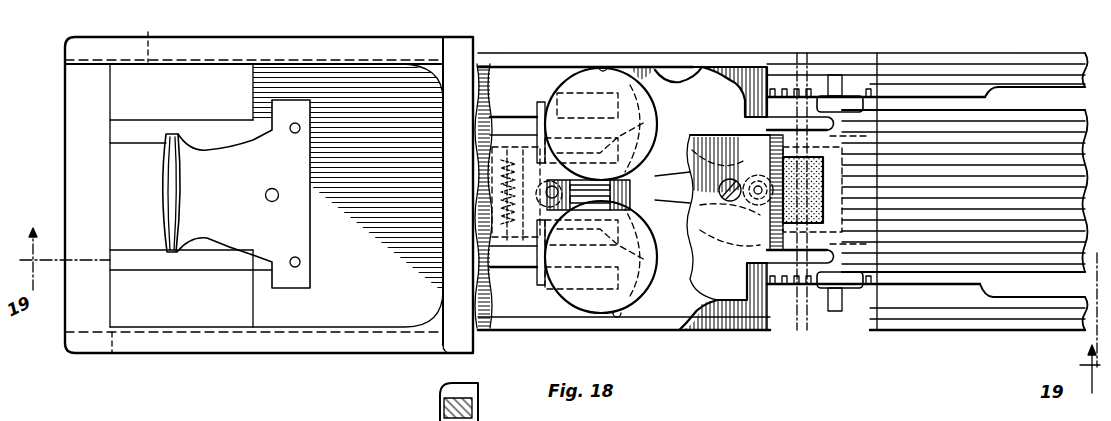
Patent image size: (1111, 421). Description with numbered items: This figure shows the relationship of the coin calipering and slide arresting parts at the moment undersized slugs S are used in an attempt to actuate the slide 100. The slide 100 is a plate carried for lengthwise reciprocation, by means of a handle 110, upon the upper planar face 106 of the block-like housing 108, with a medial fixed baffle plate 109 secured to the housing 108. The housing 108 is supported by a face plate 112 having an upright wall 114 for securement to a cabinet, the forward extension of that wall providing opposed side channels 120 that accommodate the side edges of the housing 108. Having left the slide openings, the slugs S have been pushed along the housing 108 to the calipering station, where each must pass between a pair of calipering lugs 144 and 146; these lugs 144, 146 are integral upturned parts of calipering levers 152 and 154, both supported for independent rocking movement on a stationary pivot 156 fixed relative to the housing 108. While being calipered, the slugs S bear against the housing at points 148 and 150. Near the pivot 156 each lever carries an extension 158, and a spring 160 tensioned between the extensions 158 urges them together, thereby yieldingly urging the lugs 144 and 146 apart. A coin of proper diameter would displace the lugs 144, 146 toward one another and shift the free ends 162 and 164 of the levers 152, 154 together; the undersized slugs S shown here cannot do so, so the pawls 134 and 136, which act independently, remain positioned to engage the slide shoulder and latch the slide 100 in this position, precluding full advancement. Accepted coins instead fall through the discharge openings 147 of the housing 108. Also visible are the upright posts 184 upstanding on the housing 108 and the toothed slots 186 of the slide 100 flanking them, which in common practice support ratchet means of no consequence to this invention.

The slide 100 is at (355, 312).
The upper planar face 106 is at (216, 305).
The housing 108 is at (155, 320).
The medial fixed baffle plate 109 is at (717, 242).
The handle 110 is at (198, 228).
The face plate 112 is at (304, 355).
The upright wall 114 is at (470, 47).
The side channels 120 is at (95, 371).
The pawl 134 is at (783, 160).
The pawl 136 is at (773, 215).
The calipering lug 144 is at (583, 183).
The calipering lug 146 is at (591, 206).
The discharge openings 147 is at (697, 80).
The bearing point 148 is at (604, 66).
The bearing point 150 is at (617, 313).
The calipering lever 152 is at (654, 133).
The calipering lever 154 is at (658, 242).
The stationary pivot 156 is at (541, 210).
The extension 158 is at (478, 139).
The spring 160 is at (487, 188).
The free end 162 is at (790, 108).
The free end 164 is at (795, 297).
The upright posts 184 is at (851, 104).
The toothed slots 186 is at (913, 282).
The slug S is at (585, 83).